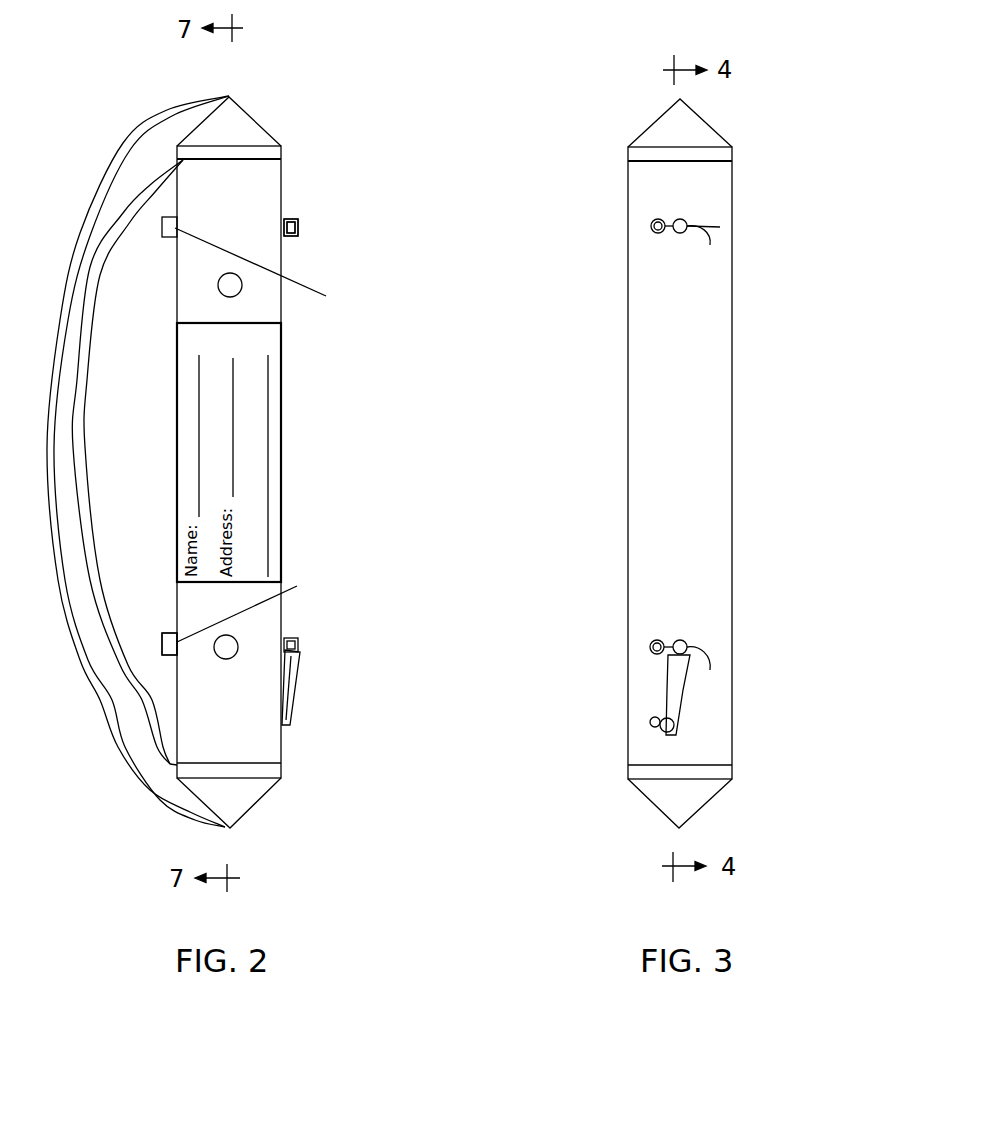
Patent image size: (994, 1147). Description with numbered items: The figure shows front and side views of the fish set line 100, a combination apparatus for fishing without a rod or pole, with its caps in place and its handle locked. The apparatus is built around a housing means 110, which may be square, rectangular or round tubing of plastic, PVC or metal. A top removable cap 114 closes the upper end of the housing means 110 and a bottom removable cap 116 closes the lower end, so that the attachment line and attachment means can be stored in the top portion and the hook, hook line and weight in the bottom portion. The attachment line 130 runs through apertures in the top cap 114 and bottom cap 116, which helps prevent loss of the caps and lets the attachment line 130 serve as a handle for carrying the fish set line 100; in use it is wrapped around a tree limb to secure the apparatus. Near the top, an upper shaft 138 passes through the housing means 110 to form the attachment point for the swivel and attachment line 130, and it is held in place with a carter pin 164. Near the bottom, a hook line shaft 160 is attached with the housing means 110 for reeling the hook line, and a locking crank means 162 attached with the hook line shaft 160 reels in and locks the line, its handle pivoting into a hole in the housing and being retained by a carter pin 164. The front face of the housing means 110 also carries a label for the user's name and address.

In FIG. 2, the fish set line 100 is at (105, 120).
In FIG. 3, the fish set line 100 is at (580, 62).
In FIG. 2, the housing means 110 is at (260, 187).
In FIG. 3, the housing means 110 is at (660, 268).
In FIG. 2, the top removable cap 114 is at (250, 130).
In FIG. 3, the top removable cap 114 is at (697, 133).
In FIG. 2, the bottom removable cap 116 is at (255, 790).
In FIG. 3, the bottom removable cap 116 is at (702, 792).
In FIG. 2, the attachment line 130 is at (188, 101).
In FIG. 2, the upper shaft 138 is at (326, 296).
In FIG. 2, the hook line shaft 160 is at (297, 586).
In FIG. 2, the locking crank means 162 is at (295, 697).
In FIG. 3, the locking crank means 162 is at (667, 702).
In FIG. 2, the carter pin 164 is at (298, 228).
In FIG. 3, the carter pin 164 is at (720, 227).